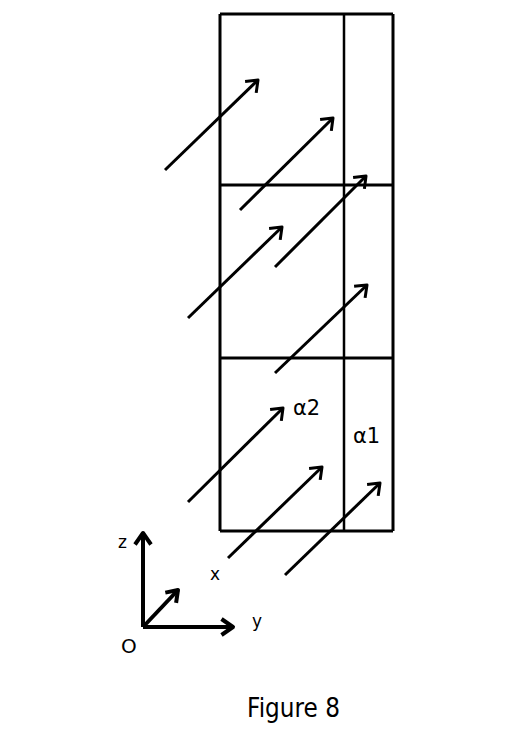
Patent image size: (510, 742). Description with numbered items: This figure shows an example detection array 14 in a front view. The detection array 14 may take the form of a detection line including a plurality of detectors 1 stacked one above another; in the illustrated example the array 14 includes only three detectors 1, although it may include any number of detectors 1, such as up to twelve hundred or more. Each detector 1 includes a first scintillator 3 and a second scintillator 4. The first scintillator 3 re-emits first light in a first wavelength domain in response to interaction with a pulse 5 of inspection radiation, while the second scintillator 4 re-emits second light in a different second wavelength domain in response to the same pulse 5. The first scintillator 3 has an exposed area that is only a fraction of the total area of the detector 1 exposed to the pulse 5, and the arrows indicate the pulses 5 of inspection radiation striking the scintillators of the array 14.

The detector 1 is at (291, 106).
The first scintillator 3 is at (377, 387).
The second scintillator 4 is at (258, 393).
The pulse of inspection radiation 5 is at (330, 562).
The detection array 14 is at (197, 225).